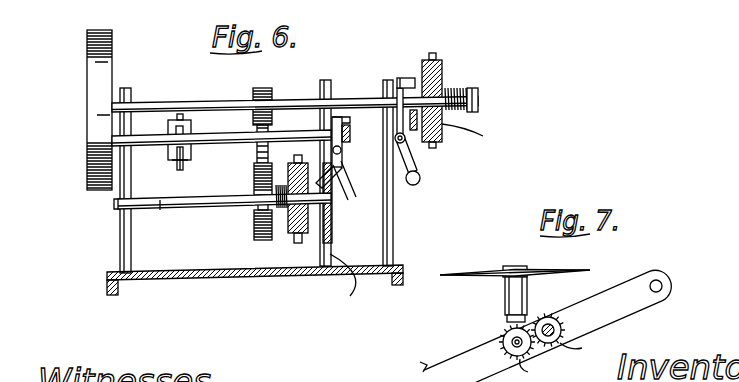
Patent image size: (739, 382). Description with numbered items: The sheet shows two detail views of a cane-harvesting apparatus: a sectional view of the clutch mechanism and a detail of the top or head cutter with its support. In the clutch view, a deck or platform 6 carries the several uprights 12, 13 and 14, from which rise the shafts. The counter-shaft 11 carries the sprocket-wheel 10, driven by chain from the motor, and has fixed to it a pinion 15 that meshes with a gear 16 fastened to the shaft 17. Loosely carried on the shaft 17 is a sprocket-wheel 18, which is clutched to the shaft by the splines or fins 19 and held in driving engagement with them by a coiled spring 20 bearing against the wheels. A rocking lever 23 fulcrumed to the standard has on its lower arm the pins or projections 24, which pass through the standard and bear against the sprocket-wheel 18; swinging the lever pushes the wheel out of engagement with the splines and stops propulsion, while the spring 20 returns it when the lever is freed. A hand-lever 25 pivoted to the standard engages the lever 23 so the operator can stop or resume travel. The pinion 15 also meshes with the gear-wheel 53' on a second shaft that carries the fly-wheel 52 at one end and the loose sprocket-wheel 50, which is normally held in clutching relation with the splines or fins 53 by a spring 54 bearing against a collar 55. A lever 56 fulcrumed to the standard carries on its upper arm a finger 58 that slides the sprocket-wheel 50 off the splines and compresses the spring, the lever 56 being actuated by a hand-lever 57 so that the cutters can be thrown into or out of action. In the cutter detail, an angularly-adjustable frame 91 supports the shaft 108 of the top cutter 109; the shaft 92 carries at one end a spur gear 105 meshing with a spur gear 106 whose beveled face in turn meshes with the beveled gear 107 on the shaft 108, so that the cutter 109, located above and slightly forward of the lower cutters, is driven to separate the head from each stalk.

In FIG. 6, the deck or platform 6 is at (178, 278).
In FIG. 6, the sprocket-wheel 10 is at (170, 158).
In FIG. 6, the counter-shaft 11 is at (218, 140).
In FIG. 6, the upright 12 is at (121, 250).
In FIG. 6, the upright or standard 13 is at (351, 283).
In FIG. 6, the standard 14 is at (394, 216).
In FIG. 6, the pinion 15 is at (233, 152).
In FIG. 6, the gear 16 is at (254, 220).
In FIG. 6, the shaft 17 is at (152, 209).
In FIG. 6, the sprocket-wheel 18 is at (309, 250).
In FIG. 6, the splines or fins 19 is at (321, 102).
In FIG. 6, the coiled spring 20 is at (280, 232).
In FIG. 6, the rocking lever 23 is at (343, 166).
In FIG. 6, the pins or projections 24 is at (334, 226).
In FIG. 6, the hand-lever 25 is at (352, 147).
In FIG. 6, the sprocket-wheel 50 is at (435, 62).
In FIG. 6, the fly-wheel 52 is at (87, 97).
In FIG. 6, the splines or fins 53 is at (478, 133).
In FIG. 6, the gear-wheel 53' is at (262, 110).
In FIG. 6, the spring 54 is at (456, 88).
In FIG. 6, the collar 55 is at (480, 96).
In FIG. 6, the lever 56 is at (417, 167).
In FIG. 6, the hand-lever 57 is at (160, 98).
In FIG. 6, the finger 58 is at (413, 78).
In FIG. 7, the frame 91 is at (613, 288).
In FIG. 7, the shaft 92 is at (584, 347).
In FIG. 7, the spur gear 105 is at (562, 318).
In FIG. 7, the spur gear 106 is at (543, 370).
In FIG. 7, the beveled gear 107 is at (504, 331).
In FIG. 7, the shaft 108 is at (515, 266).
In FIG. 7, the cutter 109 is at (532, 272).